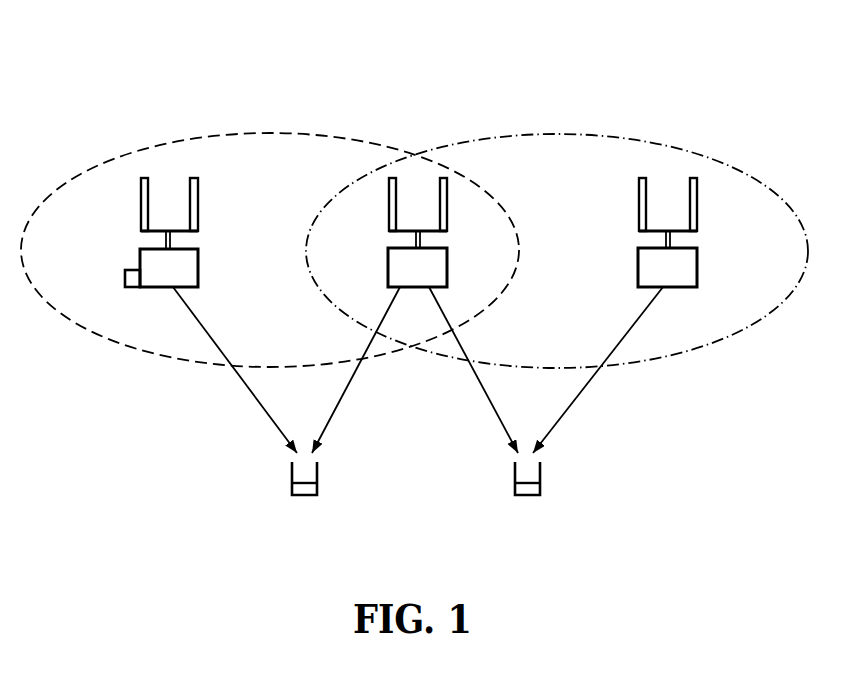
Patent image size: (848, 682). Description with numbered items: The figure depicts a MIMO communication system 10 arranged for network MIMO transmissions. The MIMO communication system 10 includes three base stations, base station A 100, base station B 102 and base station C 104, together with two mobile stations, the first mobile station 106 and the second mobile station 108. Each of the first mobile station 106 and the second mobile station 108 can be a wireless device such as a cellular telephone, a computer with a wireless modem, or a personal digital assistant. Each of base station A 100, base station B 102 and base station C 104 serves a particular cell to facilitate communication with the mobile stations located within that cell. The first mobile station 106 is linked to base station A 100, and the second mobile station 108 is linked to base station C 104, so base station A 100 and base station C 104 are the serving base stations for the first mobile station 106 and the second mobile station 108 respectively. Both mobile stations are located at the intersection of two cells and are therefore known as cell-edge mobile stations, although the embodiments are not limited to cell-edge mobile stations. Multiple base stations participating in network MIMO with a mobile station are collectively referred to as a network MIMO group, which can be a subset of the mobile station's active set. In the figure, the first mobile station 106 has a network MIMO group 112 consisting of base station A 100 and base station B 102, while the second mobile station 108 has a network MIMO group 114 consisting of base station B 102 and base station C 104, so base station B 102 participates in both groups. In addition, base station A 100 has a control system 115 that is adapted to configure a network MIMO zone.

The MIMO communication system 10 is at (622, 60).
The base station BS_A 100 is at (198, 266).
The base station BS_B 102 is at (447, 268).
The base station BS_C 104 is at (638, 268).
The mobile station MS_1 106 is at (292, 491).
The mobile station MS_2 108 is at (515, 491).
The network MIMO group 112 is at (277, 134).
The network MIMO group 114 is at (565, 136).
The control system 115 is at (125, 280).